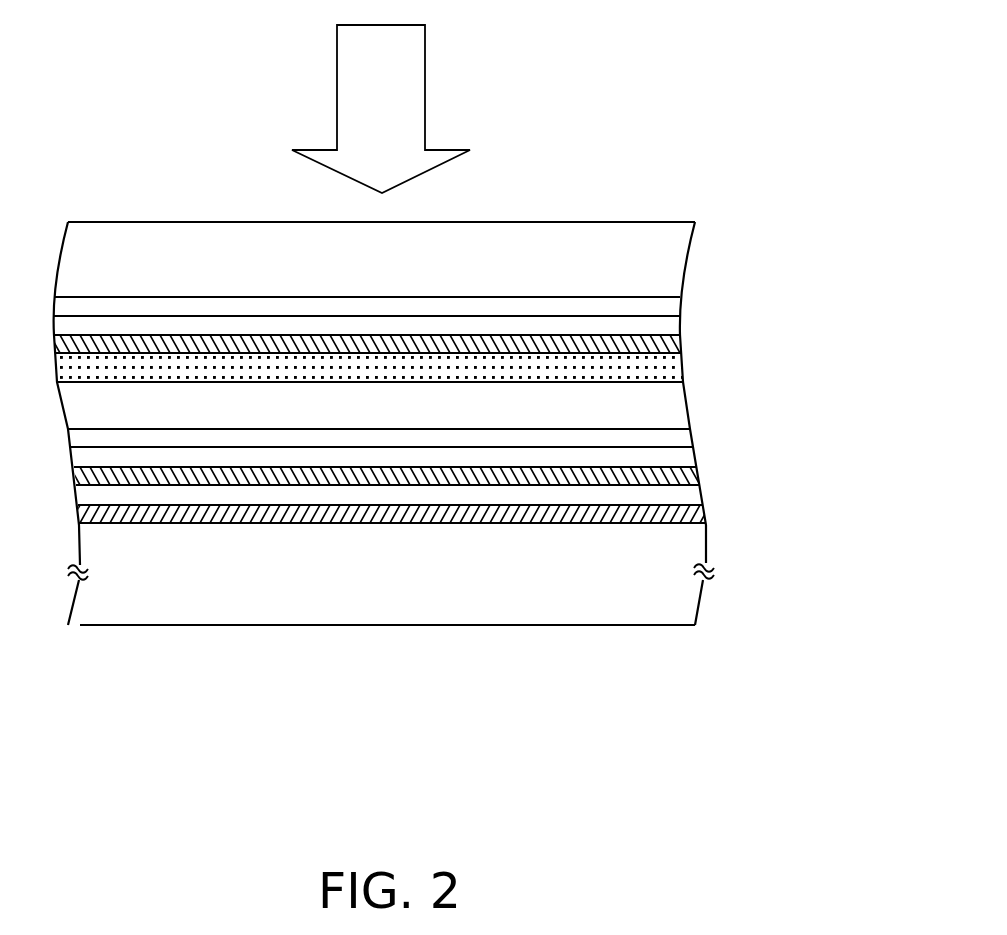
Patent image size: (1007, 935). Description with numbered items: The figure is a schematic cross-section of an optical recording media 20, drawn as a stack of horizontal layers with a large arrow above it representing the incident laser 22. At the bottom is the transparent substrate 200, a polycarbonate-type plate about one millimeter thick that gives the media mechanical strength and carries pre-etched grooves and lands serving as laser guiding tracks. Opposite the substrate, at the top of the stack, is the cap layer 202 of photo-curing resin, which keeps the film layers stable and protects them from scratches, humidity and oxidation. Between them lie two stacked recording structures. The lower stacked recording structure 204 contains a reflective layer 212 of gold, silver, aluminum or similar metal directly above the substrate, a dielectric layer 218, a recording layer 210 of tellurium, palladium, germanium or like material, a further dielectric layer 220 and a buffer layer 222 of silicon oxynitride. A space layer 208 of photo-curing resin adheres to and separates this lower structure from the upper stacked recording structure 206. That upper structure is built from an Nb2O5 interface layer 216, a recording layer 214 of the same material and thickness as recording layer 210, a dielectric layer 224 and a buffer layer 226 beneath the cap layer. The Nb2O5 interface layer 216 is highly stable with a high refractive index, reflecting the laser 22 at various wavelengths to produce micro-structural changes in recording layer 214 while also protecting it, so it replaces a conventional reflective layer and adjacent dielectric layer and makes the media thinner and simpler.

The optical recording media 20 is at (760, 697).
The laser 22 is at (408, 85).
The substrate 200 is at (688, 543).
The cap layer 202 is at (672, 260).
The stacked recording structure 204 is at (777, 393).
The stacked recording structure 206 is at (772, 245).
The space layer 208 is at (680, 403).
The recording layer 210 is at (685, 477).
The reflective layer 212 is at (696, 513).
The recording layer 214 is at (672, 345).
The Nb2O5 interface layer 216 is at (672, 363).
The dielectric layer 218 is at (688, 495).
The dielectric layer 220 is at (682, 458).
The buffer layer 222 is at (680, 439).
The dielectric layer 224 is at (672, 324).
The buffer layer 226 is at (672, 306).